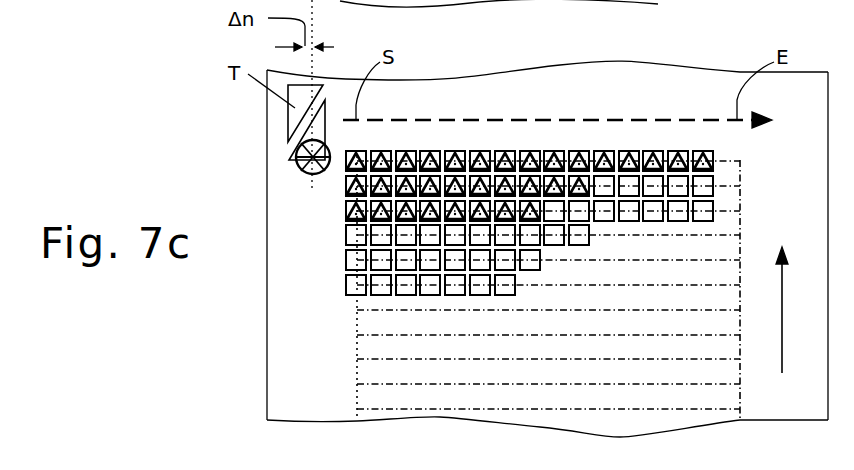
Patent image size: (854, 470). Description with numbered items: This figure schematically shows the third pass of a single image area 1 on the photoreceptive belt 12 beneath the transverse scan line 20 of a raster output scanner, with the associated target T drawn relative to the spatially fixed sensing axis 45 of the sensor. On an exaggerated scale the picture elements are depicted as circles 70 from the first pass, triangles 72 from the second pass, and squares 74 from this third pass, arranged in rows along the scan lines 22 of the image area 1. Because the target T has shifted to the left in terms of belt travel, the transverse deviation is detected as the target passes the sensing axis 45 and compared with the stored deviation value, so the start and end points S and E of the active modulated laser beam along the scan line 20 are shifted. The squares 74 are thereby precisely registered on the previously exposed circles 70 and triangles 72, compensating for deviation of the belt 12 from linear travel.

The region boundary 1 is at (740, 196).
The belt 12 is at (818, 226).
The scan line 20 is at (543, 117).
The scan lines 22 is at (640, 312).
The sensing axis 45 is at (300, 168).
The circles 70 is at (356, 152).
The triangles 72 is at (385, 152).
The squares 74 is at (535, 262).